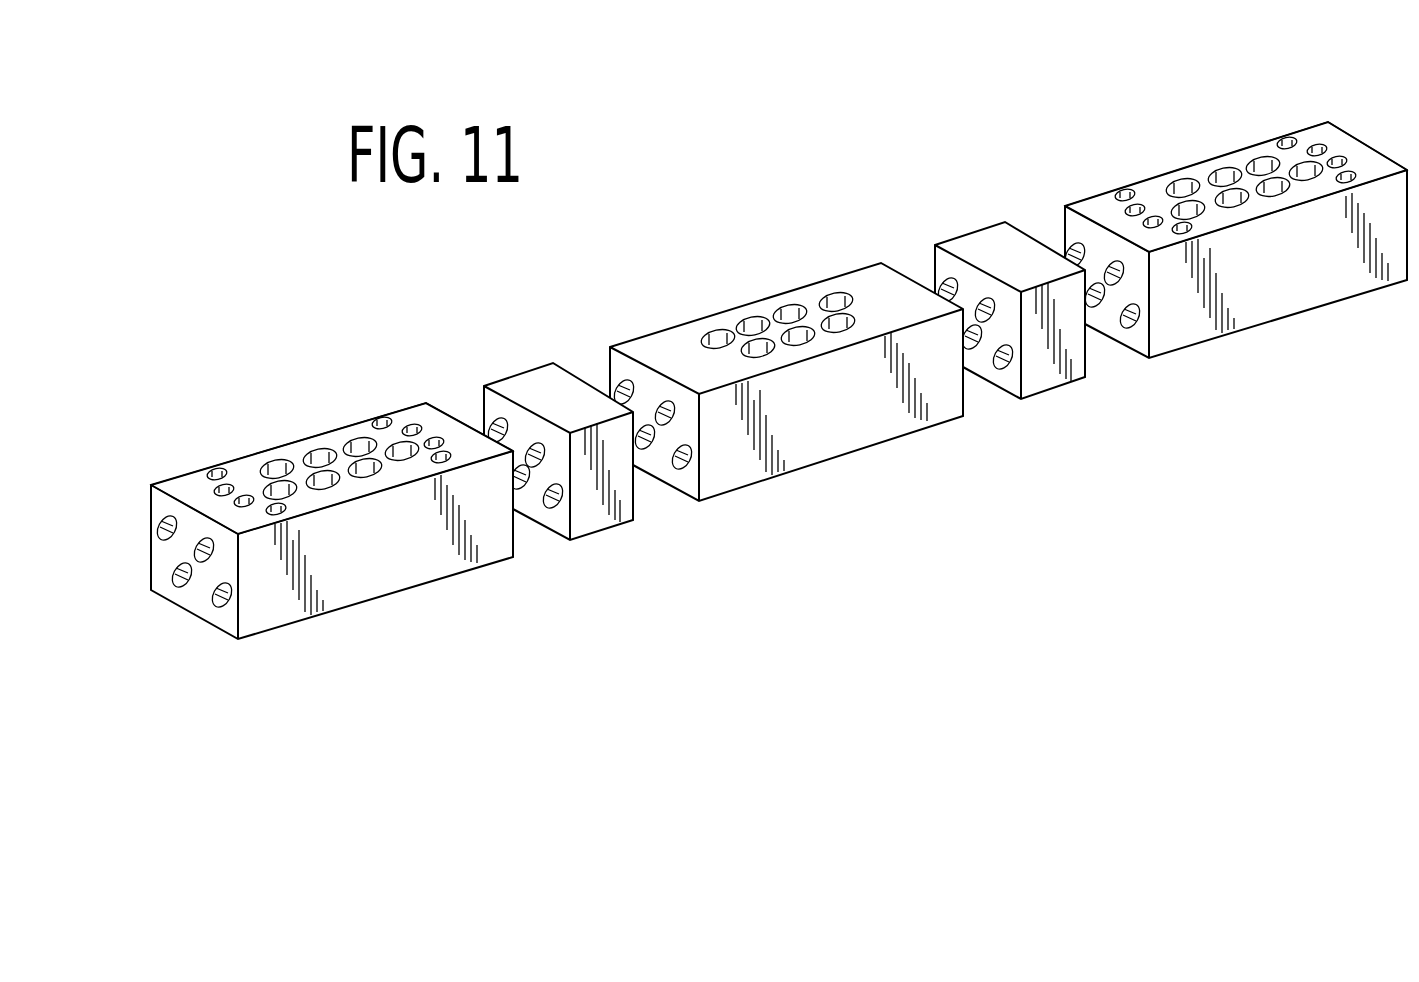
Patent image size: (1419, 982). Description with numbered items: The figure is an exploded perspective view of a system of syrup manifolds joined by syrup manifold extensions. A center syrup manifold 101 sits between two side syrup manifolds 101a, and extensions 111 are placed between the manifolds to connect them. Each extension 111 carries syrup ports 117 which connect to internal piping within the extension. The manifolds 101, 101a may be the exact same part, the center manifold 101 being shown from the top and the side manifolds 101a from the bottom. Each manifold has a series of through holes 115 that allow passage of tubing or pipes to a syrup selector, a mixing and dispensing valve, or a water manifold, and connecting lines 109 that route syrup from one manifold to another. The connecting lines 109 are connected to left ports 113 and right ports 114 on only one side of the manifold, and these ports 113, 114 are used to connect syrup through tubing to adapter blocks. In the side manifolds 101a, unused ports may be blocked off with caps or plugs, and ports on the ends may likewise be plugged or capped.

The syrup manifold 101 is at (910, 437).
The side syrup manifold 101a is at (365, 600).
The connecting line 109 is at (160, 530).
The extension 111 is at (613, 527).
The left port 113 is at (207, 432).
The right port 114 is at (393, 383).
The through hole 115 is at (319, 412).
The syrup port 117 is at (545, 503).